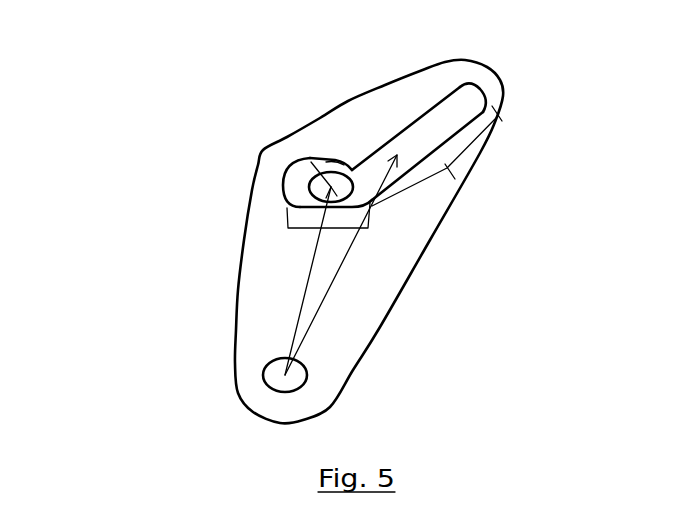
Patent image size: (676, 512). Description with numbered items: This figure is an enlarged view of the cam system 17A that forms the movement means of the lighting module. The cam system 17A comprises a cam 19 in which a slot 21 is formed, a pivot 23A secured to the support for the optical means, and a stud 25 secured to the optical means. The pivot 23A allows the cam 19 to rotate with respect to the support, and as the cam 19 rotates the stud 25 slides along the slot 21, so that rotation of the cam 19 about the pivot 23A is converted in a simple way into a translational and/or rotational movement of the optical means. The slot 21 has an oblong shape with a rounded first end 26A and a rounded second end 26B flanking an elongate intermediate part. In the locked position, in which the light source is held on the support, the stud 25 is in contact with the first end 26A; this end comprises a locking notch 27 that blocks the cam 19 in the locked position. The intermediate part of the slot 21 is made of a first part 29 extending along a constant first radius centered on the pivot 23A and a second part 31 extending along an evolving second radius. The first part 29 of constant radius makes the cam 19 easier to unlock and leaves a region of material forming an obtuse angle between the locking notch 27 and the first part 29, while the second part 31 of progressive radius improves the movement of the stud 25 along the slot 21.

The cam system 17A is at (182, 102).
The cam 19 is at (260, 328).
The slot 21 is at (438, 122).
The pivot 23A is at (262, 381).
The stud 25 is at (300, 162).
The first end 26A is at (283, 182).
The second end 26B is at (482, 91).
The locking notch 27 is at (292, 160).
The first part 29 is at (325, 230).
The second part 31 is at (437, 161).